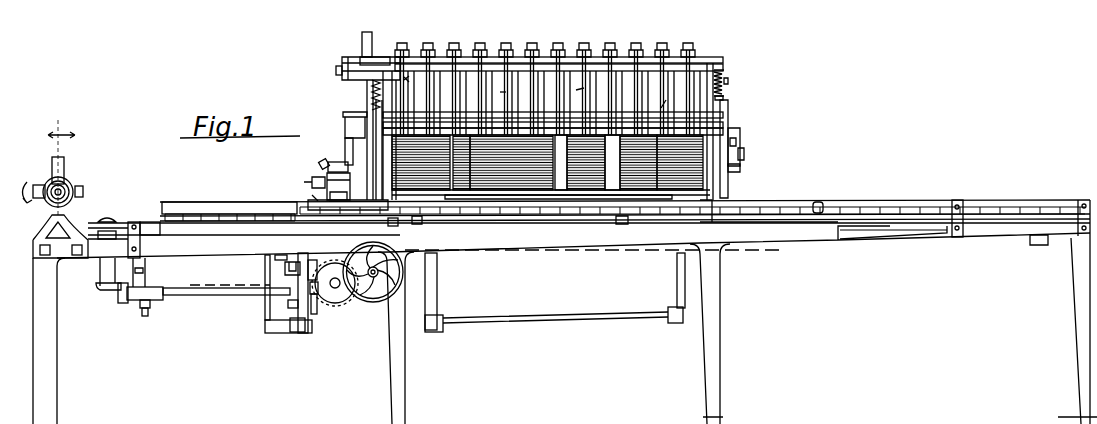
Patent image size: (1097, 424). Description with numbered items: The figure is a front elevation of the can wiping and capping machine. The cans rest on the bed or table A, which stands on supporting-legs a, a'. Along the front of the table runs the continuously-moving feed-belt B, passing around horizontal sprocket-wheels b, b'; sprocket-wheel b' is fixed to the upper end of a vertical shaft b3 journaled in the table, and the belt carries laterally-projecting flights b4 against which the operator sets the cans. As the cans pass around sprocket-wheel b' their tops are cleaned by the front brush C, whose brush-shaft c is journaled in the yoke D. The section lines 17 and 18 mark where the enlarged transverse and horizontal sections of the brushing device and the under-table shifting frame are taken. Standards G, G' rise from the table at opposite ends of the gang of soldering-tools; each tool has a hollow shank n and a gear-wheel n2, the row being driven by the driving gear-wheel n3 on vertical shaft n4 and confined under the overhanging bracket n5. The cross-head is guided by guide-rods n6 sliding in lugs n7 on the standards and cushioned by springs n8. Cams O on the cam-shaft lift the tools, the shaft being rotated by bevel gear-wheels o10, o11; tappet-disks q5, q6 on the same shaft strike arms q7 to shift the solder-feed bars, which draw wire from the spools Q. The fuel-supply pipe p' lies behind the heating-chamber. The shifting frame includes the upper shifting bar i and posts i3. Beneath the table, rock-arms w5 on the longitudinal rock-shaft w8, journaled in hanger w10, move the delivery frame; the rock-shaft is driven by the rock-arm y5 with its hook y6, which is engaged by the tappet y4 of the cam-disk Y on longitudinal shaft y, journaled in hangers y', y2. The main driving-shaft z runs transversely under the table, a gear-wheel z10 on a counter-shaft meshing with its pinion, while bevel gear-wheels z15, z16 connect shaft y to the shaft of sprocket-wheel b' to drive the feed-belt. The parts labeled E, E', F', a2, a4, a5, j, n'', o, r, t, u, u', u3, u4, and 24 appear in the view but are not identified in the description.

The section line 17 17 is at (27, 240).
The section line 18 18 is at (100, 273).
The pin 24 is at (395, 226).
The bed or table A is at (568, 250).
The feed-belt B is at (780, 202).
The front brush C is at (80, 188).
The yoke D is at (65, 162).
The arm E is at (339, 187).
The arm extension E' is at (314, 182).
The box F' is at (355, 125).
The standard G is at (549, 135).
The standard G' is at (721, 202).
The cams O is at (354, 151).
The reels or spools of solder-wire Q is at (551, 165).
The rotary cam wheel or disk Y is at (303, 345).
The supporting-leg a is at (565, 312).
The supporting-leg a' is at (563, 334).
The collar a2 is at (42, 185).
The plate a4 is at (212, 208).
The bracket plate a5 is at (136, 221).
The sprocket-wheel b is at (769, 247).
The sprocket-wheel b' is at (110, 215).
The vertical shaft b3 is at (107, 216).
The wings or flights b4 is at (822, 204).
The brush-shaft c is at (48, 202).
The longitudinal shifting bar i is at (660, 196).
The posts i3 is at (420, 226).
The pin j is at (309, 199).
The hollow shank n is at (559, 94).
The gear-wheel n2 is at (468, 57).
The driving gear-wheel n3 is at (380, 58).
The vertical shaft n4 is at (367, 32).
The overhanging bracket n5 is at (345, 56).
The guide-rods n6 is at (724, 76).
The lugs n7 is at (724, 97).
The springs n8 is at (730, 80).
The stop n'' is at (746, 169).
The cam o is at (736, 136).
The bevel gear-wheel o10 is at (327, 166).
The bevel gear-wheel o11 is at (345, 160).
The fuel-supply pipe p' is at (716, 120).
The tappet-disk q5 is at (730, 114).
The tappet-disk q6 is at (370, 112).
The upwardly-projecting arm q7 is at (740, 152).
The chain guard r is at (995, 214).
The bar t is at (418, 98).
The mold u is at (554, 103).
The mold bolt u' is at (545, 86).
The mold part u3 is at (574, 93).
The mold part u4 is at (671, 95).
The rock-arms w5 is at (437, 290).
The longitudinal rock-shaft w8 is at (578, 320).
The hanger w10 is at (275, 326).
The longitudinal shaft y is at (226, 327).
The hanger y' is at (145, 296).
The hanger y2 is at (316, 318).
The tappet y4 is at (288, 304).
The rock-arm y5 is at (312, 260).
The hook y6 is at (287, 270).
The main driving-shaft z is at (392, 278).
The gear-wheel z10 is at (352, 300).
The bevel gear-wheel z15 is at (122, 305).
The bevel gear-wheel z16 is at (104, 292).